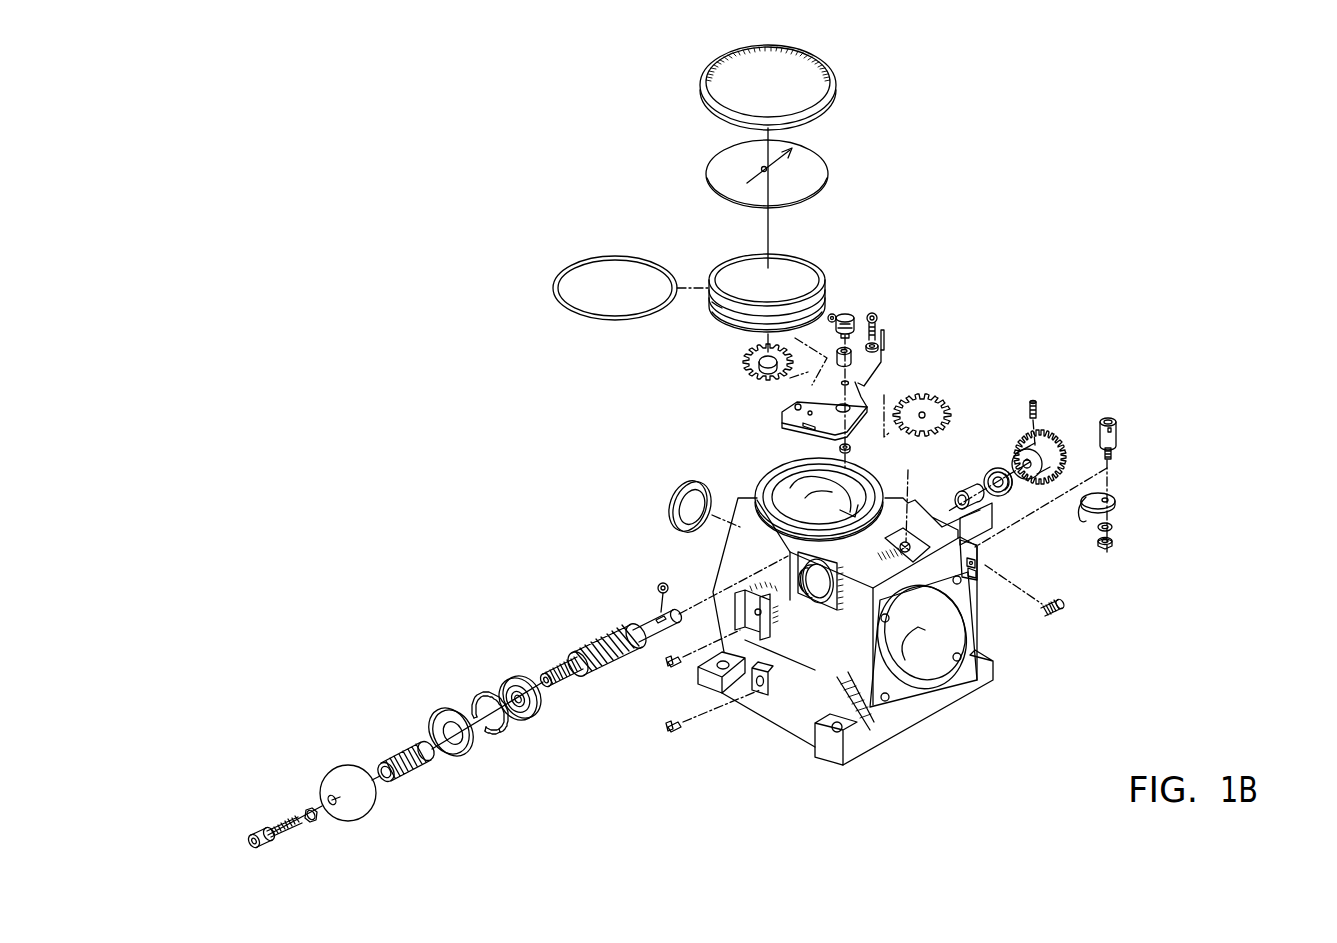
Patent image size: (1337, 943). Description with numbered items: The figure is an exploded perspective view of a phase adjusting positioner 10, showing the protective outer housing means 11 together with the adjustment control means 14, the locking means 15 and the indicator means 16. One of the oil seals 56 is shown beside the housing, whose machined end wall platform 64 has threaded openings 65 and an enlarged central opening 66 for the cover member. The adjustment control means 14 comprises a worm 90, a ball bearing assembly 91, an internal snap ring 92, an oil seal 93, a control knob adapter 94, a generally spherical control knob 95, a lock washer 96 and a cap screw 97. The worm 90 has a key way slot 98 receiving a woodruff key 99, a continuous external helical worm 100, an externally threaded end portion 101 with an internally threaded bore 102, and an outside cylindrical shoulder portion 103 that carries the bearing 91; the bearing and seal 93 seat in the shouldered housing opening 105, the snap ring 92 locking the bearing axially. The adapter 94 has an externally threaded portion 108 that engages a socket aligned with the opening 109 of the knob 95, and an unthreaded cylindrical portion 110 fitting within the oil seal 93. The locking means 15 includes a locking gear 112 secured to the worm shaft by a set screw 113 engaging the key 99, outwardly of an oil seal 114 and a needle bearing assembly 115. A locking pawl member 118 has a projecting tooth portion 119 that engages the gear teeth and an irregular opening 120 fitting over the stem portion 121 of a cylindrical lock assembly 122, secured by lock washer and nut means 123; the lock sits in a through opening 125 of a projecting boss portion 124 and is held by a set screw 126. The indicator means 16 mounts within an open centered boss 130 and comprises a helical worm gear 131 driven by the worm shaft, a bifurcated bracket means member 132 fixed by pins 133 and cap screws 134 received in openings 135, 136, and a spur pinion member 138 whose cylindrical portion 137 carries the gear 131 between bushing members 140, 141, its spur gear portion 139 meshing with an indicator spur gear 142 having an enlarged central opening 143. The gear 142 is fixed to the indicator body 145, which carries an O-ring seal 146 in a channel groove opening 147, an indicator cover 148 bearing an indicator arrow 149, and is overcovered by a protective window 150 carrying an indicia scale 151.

The positioner 10 is at (1217, 352).
The protective outer housing means 11 is at (880, 624).
The adjustment control means 14 is at (432, 646).
The locking means 15 is at (1200, 498).
The indicator means 16 is at (625, 240).
The oil seal 56 is at (676, 500).
The end wall platform 64 is at (960, 645).
The threaded opening 65 is at (887, 700).
The enlarged central opening 66 is at (965, 673).
The worm 90 is at (594, 649).
The ball bearing assembly 91 is at (526, 677).
The internal snap ring 92 is at (484, 692).
The oil seal 93 is at (448, 712).
The control knob adapter 94 is at (421, 781).
The control knob 95 is at (317, 773).
The lock washer 96 is at (304, 810).
The cap screw 97 is at (258, 835).
The key way slot 98 is at (660, 612).
The woodruff key 99 is at (663, 583).
The external helical worm 100 is at (604, 661).
The externally threaded end portion 101 is at (570, 666).
The internally threaded bore 102 is at (550, 687).
The outside cylindrical shoulder portion 103 is at (582, 662).
The opening 105 is at (806, 596).
The externally threaded portion 108 is at (404, 774).
The opening 109 is at (327, 797).
The unthreaded cylindrical portion 110 is at (424, 758).
The locking gear 112 is at (1055, 427).
The set screw 113 is at (1038, 404).
The oil seal 114 is at (992, 466).
The needle bearing assembly 115 is at (962, 496).
The locking pawl member 118 is at (1120, 503).
The projecting tooth portion 119 is at (1084, 506).
The irregular opening 120 is at (1117, 505).
The stem portion 121 is at (1111, 452).
The cylindrical lock assembly 122 is at (1115, 425).
The lock washer and nut means 123 is at (1113, 543).
The projecting boss portion 124 is at (980, 558).
The through opening 125 is at (988, 548).
The set screw 126 is at (1063, 612).
The open centered boss 130 is at (787, 462).
The helical worm gear 131 is at (940, 412).
The bifurcated bracket means member 132 is at (861, 397).
The pin 133 is at (885, 340).
The cap screw 134 is at (878, 318).
The opening 135 is at (860, 383).
The opening 136 is at (781, 417).
The cylindrical portion 137 is at (868, 316).
The spur pinion member 138 is at (857, 306).
The spur gear portion 139 is at (849, 311).
The bushing member 140 is at (836, 360).
The bushing member 141 is at (838, 447).
The indicator spur gear 142 is at (755, 364).
The enlarged central opening 143 is at (748, 373).
The indicator body 145 is at (806, 253).
The O-ring seal 146 is at (615, 320).
The channel groove opening 147 is at (722, 316).
The indicator cover 148 is at (810, 172).
The indicator arrow 149 is at (787, 173).
The protective window 150 is at (818, 76).
The indicia scale 151 is at (817, 52).